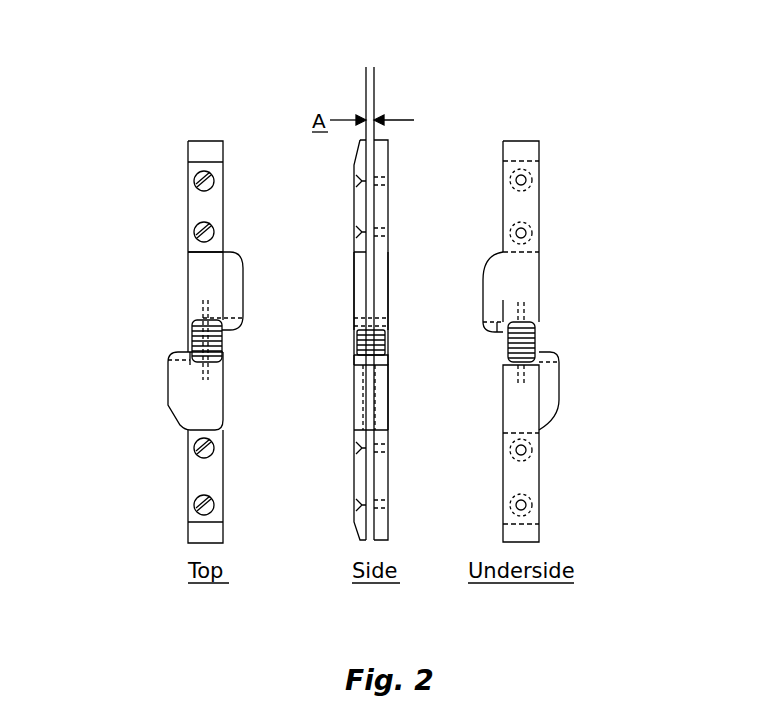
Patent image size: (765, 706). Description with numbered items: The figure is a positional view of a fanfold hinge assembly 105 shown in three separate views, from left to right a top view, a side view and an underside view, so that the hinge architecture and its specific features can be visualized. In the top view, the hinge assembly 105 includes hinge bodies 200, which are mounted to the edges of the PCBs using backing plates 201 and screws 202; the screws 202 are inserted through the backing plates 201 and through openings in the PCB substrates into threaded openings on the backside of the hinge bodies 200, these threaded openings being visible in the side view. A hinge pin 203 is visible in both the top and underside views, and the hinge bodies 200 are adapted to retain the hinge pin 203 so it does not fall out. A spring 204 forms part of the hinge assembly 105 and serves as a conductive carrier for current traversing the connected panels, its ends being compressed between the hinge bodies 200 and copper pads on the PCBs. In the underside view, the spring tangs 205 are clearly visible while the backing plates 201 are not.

The fanfold hinge assembly 105 is at (427, 107).
The hinge bodies 200 is at (235, 262).
The backing plates 201 is at (188, 219).
The screws 202 is at (193, 451).
The hinge pin 203 is at (205, 300).
The spring 204 is at (224, 345).
The spring tangs 205 is at (183, 355).